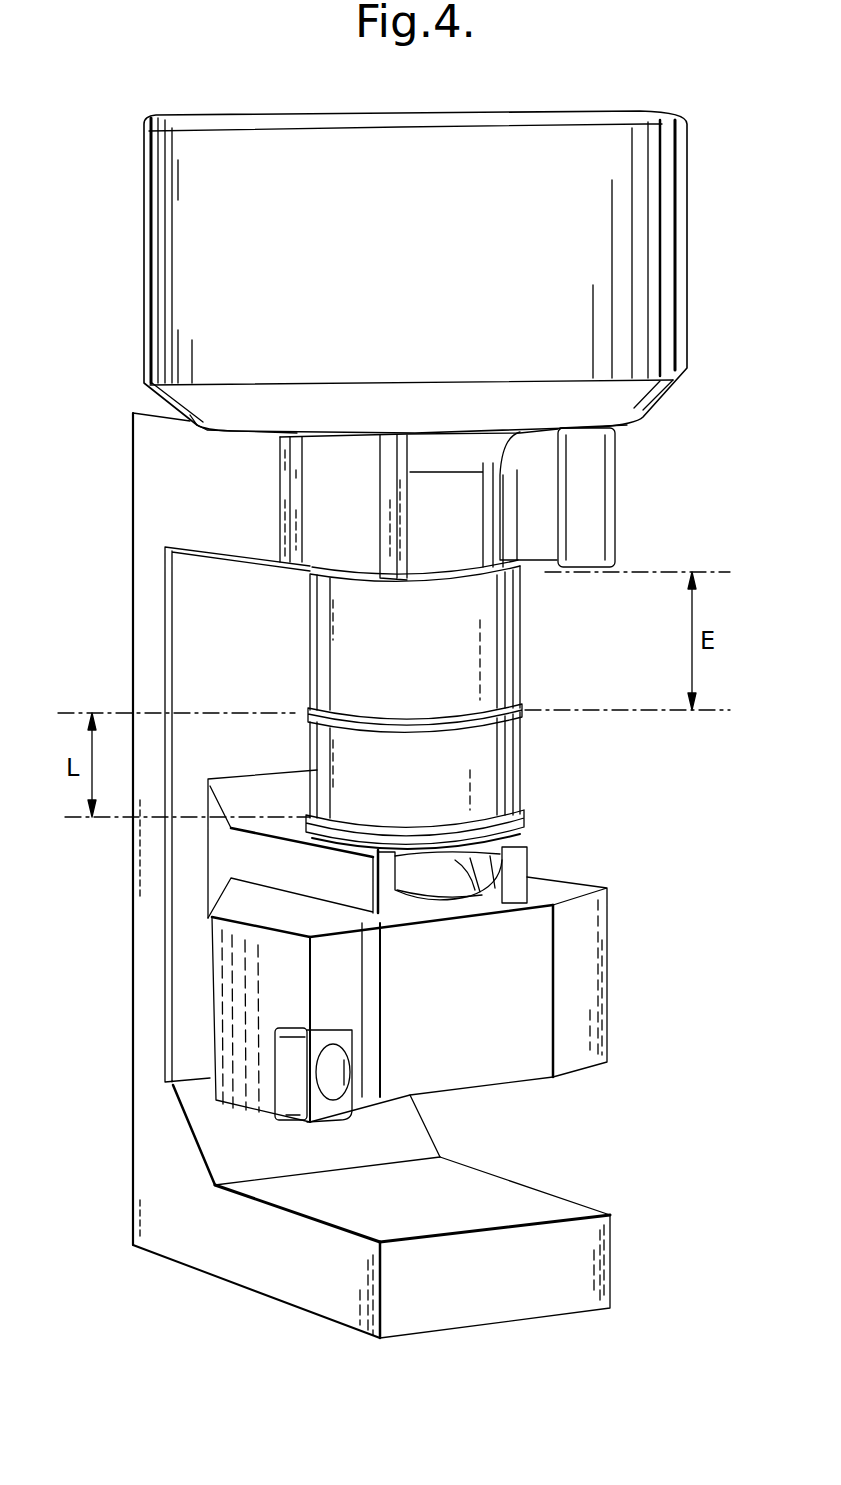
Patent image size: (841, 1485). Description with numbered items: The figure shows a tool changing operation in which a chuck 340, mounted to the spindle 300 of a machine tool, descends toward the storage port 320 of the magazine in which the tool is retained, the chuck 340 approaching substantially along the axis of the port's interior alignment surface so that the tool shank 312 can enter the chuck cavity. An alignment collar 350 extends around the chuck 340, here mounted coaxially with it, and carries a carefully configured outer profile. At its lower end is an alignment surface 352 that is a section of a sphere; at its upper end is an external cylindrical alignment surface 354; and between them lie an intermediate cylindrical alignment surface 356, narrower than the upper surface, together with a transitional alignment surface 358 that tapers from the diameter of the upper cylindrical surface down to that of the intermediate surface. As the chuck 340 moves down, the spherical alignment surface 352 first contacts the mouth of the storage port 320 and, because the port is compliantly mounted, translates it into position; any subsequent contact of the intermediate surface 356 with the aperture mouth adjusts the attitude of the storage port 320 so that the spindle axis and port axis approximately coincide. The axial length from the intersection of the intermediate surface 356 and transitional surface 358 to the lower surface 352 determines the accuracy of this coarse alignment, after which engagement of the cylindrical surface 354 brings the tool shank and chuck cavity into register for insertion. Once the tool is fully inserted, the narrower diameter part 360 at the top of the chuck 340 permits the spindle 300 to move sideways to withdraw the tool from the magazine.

The spindle 300 is at (432, 270).
The tool shank 312 is at (587, 1000).
The storage port 320 is at (572, 1212).
The chuck 340 is at (306, 698).
The alignment collar 350 is at (292, 649).
The alignment surface 352 is at (505, 821).
The external cylindrical alignment surface 354 is at (465, 638).
The intermediate cylindrical alignment surface 356 is at (505, 760).
The transitional alignment surface 358 is at (512, 709).
The narrower diameter part 360 is at (458, 540).